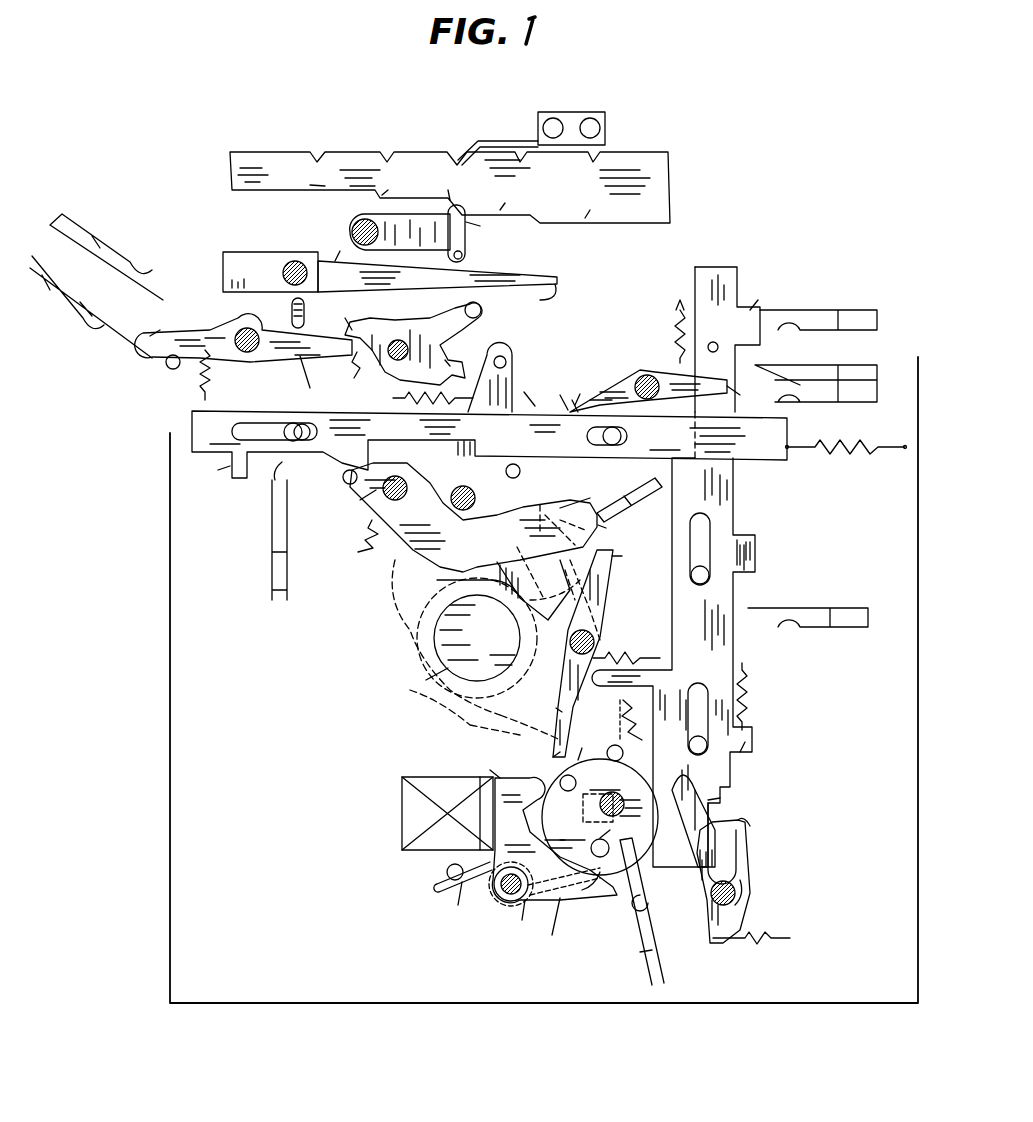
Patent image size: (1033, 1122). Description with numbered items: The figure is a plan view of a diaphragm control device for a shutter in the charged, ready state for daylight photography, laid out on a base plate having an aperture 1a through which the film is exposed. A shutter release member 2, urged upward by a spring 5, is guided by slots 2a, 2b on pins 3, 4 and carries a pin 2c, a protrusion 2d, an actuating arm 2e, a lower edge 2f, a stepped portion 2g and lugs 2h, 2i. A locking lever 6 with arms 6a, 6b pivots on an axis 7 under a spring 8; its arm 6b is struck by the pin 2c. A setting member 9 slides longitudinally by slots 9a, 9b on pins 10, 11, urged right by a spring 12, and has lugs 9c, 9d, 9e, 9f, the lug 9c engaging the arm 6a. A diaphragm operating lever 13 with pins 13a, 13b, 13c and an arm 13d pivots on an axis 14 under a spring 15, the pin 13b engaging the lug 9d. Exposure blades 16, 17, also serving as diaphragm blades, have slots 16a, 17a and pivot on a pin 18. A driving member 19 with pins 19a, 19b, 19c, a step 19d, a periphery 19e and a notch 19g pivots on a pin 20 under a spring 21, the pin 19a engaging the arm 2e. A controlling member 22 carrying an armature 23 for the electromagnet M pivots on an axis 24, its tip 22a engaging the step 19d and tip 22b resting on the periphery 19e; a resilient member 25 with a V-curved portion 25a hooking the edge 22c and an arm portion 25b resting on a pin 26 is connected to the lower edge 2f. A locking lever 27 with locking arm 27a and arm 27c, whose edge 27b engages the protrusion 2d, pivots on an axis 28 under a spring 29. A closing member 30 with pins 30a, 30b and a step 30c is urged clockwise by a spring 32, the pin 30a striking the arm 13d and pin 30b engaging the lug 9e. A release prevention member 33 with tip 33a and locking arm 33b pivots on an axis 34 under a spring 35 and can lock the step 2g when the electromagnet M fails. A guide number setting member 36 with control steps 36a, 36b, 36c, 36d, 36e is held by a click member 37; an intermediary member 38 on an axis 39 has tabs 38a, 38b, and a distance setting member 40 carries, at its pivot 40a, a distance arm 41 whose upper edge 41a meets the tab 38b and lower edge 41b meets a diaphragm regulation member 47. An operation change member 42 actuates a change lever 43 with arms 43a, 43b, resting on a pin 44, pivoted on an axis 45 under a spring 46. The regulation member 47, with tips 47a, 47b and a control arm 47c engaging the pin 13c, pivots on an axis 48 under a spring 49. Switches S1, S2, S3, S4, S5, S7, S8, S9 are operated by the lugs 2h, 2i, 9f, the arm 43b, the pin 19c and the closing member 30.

The aperture 1a is at (425, 683).
The shutter release member 2 is at (712, 268).
The guide slot 2a is at (712, 524).
The guide slot 2b is at (708, 700).
The pin 2c is at (720, 333).
The protrusion 2d is at (650, 685).
The actuating arm 2e is at (582, 808).
The lower edge 2f is at (655, 911).
The stepped portion 2g is at (728, 778).
The lug 2h is at (766, 294).
The lug 2i is at (756, 554).
The pin 3 is at (704, 580).
The pin 4 is at (704, 749).
The spring 5 is at (748, 702).
The locking lever 6 is at (620, 380).
The arm 6a is at (579, 382).
The arm 6b is at (748, 391).
The axis 7 is at (650, 374).
The spring 8 is at (678, 336).
The setting member 9 is at (757, 462).
The guide slot 9a is at (521, 387).
The guide slot 9b is at (257, 431).
The lug 9c is at (560, 391).
The lug 9d is at (479, 436).
The lug 9e is at (342, 476).
The lug 9f is at (211, 473).
The pin 10 is at (621, 437).
The pin 11 is at (288, 440).
The spring 12 is at (828, 452).
The diaphragm operating lever 13 is at (398, 492).
The pin 13a is at (477, 638).
The pin 13b is at (520, 470).
The pin 13c is at (506, 354).
The arm 13d is at (461, 583).
The axis 14 is at (475, 490).
The spring 15 is at (388, 392).
The exposure blade 16 is at (388, 620).
The slot 16a is at (523, 562).
The exposure blade 17 is at (488, 726).
The slot 17a is at (548, 589).
The pin 18 is at (582, 600).
The driving member 19 is at (618, 880).
The pin 19a is at (589, 772).
The pin 19b is at (628, 712).
The pin 19c is at (617, 831).
The step 19d is at (592, 850).
The periphery 19e is at (599, 739).
The notch 19g is at (672, 858).
The pin 20 is at (616, 794).
The spring 21 is at (640, 722).
The controlling member 22 is at (465, 866).
The tip 22a is at (590, 892).
The tip 22b is at (482, 763).
The edge 22c is at (517, 924).
The armature 23 is at (488, 790).
The axis 24 is at (504, 900).
The resilient member 25 is at (564, 896).
The V-curved portion 25a is at (560, 929).
The arm portion 25b is at (442, 902).
The pin 26 is at (436, 886).
The locking lever 27 is at (606, 586).
The locking arm 27a is at (638, 559).
The edge 27b is at (542, 703).
The arm 27c is at (534, 763).
The axis 28 is at (600, 614).
The spring 29 is at (632, 642).
The closing member 30 is at (372, 520).
The pin 30a is at (592, 486).
The pin 30b is at (345, 505).
The step 30c is at (621, 529).
The spring 32 is at (358, 556).
The release prevention member 33 is at (746, 855).
The tip 33a is at (738, 795).
The locking arm 33b is at (765, 830).
The axis 34 is at (737, 892).
The spring 35 is at (744, 944).
The guide number setting member 36 is at (626, 158).
The control step 36a is at (298, 181).
The control step 36b is at (405, 187).
The control step 36c is at (465, 191).
The control step 36d is at (520, 199).
The control step 36e is at (605, 207).
The click member 37 is at (550, 112).
The intermediary member 38 is at (466, 238).
The tab 38a is at (493, 229).
The tab 38b is at (464, 256).
The axis 39 is at (352, 222).
The distance setting member 40 is at (222, 268).
The pivot 40a is at (283, 272).
The distance arm 41 is at (556, 279).
The upper edge 41a is at (313, 244).
The lower edge 41b is at (555, 296).
The operation change member 42 is at (292, 308).
The change lever 43 is at (218, 362).
The arm 43a is at (315, 380).
The arm 43b is at (160, 320).
The pin 44 is at (168, 368).
The axis 45 is at (250, 352).
The spring 46 is at (200, 398).
The diaphragm regulation member 47 is at (440, 314).
The tip 47a is at (350, 313).
The tip 47b is at (493, 314).
The control arm 47c is at (457, 353).
The axis 48 is at (396, 340).
The spring 49 is at (341, 367).
The electromagnet M is at (402, 815).
The power switch S1 is at (820, 296).
The switch S2 is at (878, 392).
The timing switch S3 is at (272, 548).
The switch S4 is at (92, 232).
The switch S5 is at (47, 318).
The switch S7 is at (640, 968).
The trigger switch S8 is at (632, 502).
The switch S9 is at (818, 606).